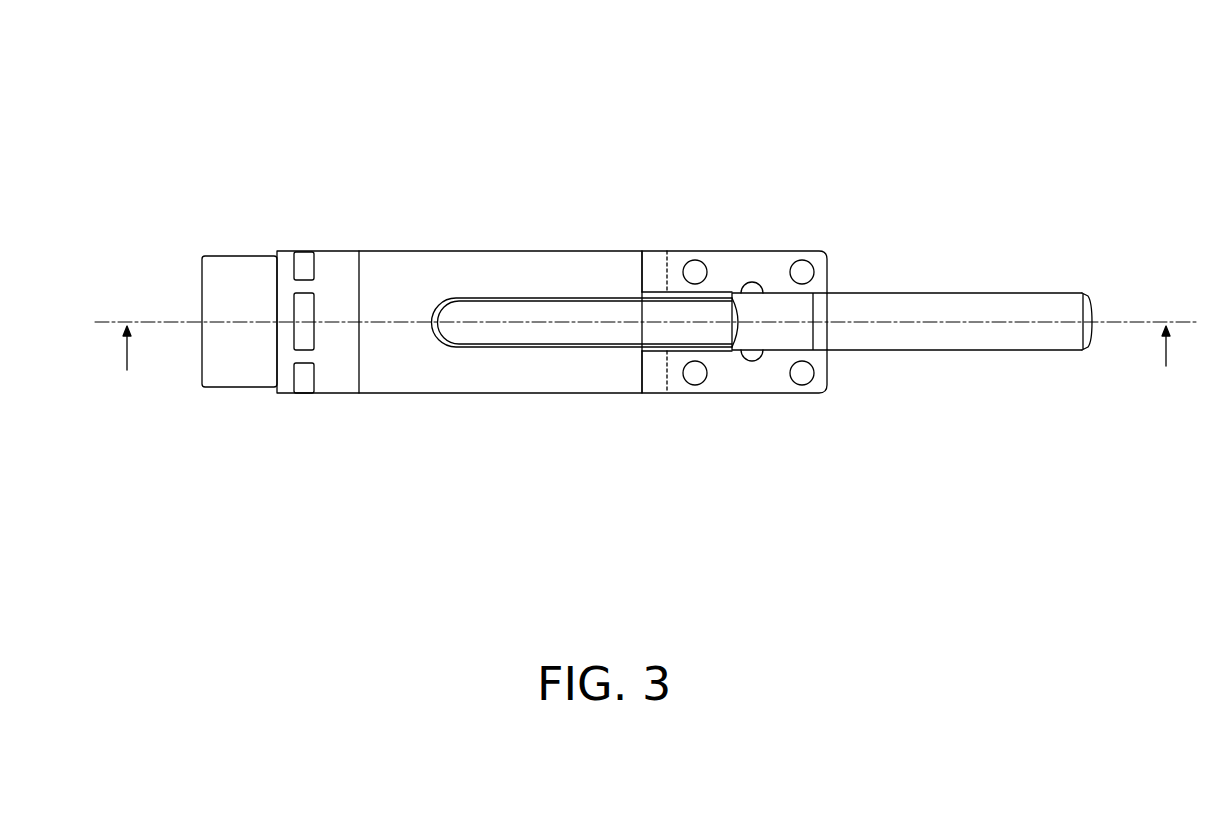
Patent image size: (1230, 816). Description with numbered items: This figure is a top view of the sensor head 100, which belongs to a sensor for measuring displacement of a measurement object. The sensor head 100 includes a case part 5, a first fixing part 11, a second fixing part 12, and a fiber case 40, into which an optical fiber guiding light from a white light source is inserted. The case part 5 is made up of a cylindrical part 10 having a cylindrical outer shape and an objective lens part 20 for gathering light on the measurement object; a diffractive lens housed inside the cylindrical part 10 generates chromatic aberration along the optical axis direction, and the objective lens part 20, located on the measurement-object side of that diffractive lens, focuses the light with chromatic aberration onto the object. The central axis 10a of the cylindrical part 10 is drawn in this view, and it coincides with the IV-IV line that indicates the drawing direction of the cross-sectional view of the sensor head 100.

The sensor head 100 is at (688, 146).
The case part 5 is at (390, 501).
The cylindrical part 10 is at (433, 394).
The central axis 10a is at (1141, 322).
The objective lens part 20 is at (335, 394).
The second fixing part 12 is at (762, 250).
The first fixing part 11 is at (805, 394).
The fiber case 40 is at (983, 292).